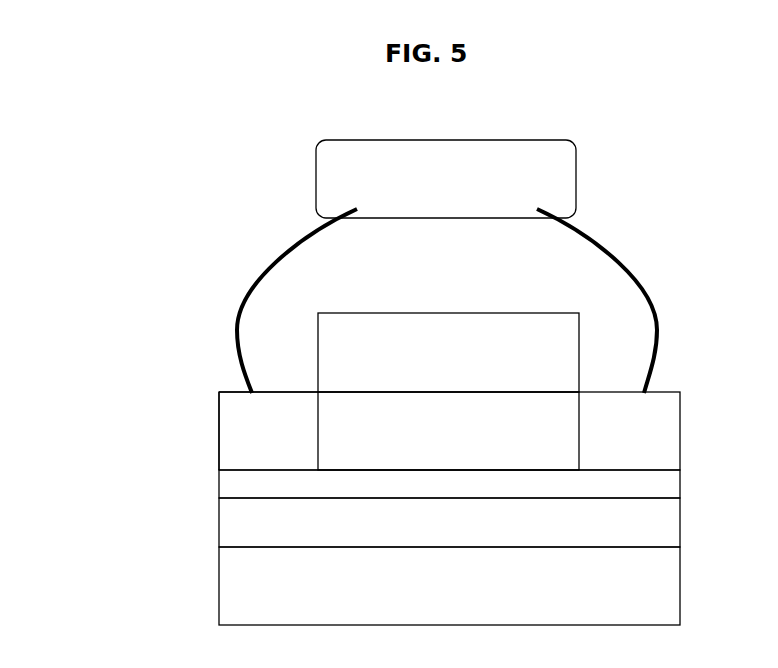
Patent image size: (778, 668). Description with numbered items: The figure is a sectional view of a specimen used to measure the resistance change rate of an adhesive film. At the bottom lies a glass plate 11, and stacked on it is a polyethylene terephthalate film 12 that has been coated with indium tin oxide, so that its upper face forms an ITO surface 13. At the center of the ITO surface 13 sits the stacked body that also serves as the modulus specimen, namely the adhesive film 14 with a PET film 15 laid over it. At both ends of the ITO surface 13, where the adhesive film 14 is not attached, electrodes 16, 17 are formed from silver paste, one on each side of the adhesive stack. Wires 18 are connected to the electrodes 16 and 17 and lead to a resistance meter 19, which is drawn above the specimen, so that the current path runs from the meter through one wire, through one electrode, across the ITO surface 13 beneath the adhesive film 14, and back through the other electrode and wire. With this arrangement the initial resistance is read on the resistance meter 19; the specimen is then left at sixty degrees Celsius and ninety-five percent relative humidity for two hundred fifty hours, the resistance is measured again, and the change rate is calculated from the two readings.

The glass plate 11 is at (665, 587).
The polyethylene terephthalate (PET) film 12 is at (665, 520).
The ITO surface 13 is at (665, 485).
The adhesive film 14 is at (541, 408).
The PET film 15 is at (541, 357).
The electrode 16 is at (665, 423).
The electrode 17 is at (235, 426).
The wires 18 is at (242, 297).
The resistance meter 19 is at (556, 197).